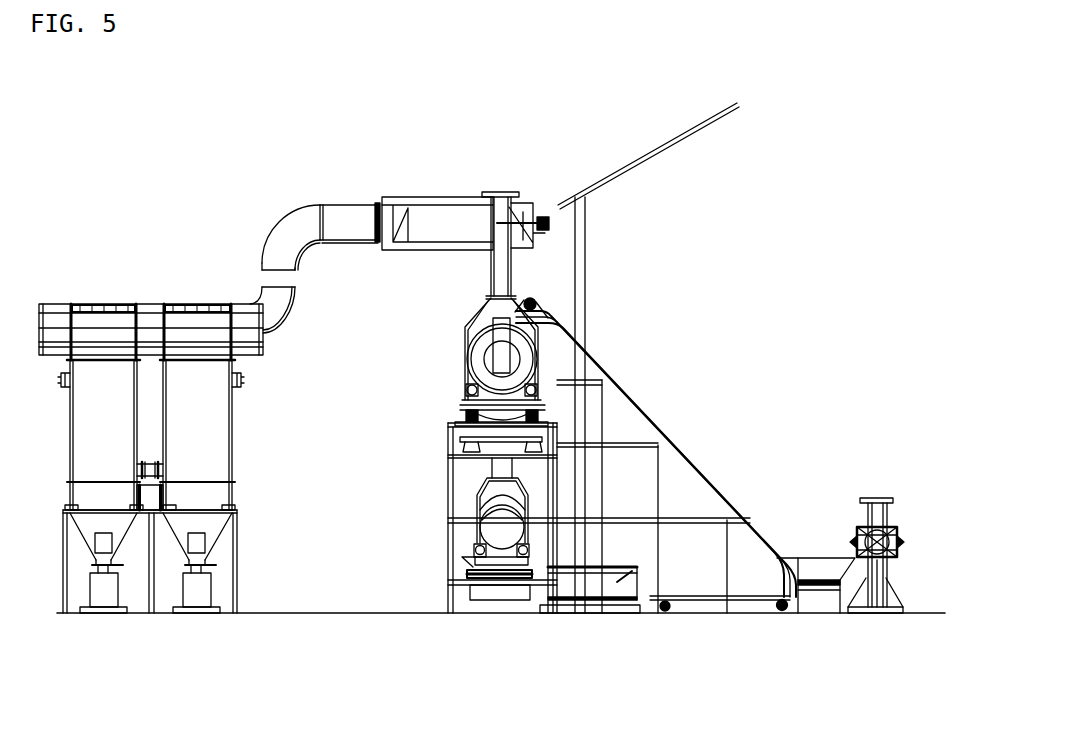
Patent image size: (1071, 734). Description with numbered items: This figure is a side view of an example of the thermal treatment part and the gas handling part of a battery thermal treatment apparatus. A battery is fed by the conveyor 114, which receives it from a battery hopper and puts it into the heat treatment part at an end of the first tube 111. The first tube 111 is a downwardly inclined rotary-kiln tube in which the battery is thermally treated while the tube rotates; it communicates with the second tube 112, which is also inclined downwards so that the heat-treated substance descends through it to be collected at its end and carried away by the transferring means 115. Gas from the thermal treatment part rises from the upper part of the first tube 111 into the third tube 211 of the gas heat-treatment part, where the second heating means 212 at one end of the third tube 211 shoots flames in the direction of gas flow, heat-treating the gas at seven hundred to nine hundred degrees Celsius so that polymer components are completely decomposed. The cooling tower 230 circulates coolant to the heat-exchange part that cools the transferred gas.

The first tube 111 is at (490, 366).
The second tube 112 is at (493, 533).
The conveyor 114 is at (664, 434).
The transferring means 115 is at (594, 614).
The third tube 211 is at (401, 215).
The second heating means 212 is at (543, 215).
The cooling tower 230 is at (168, 587).